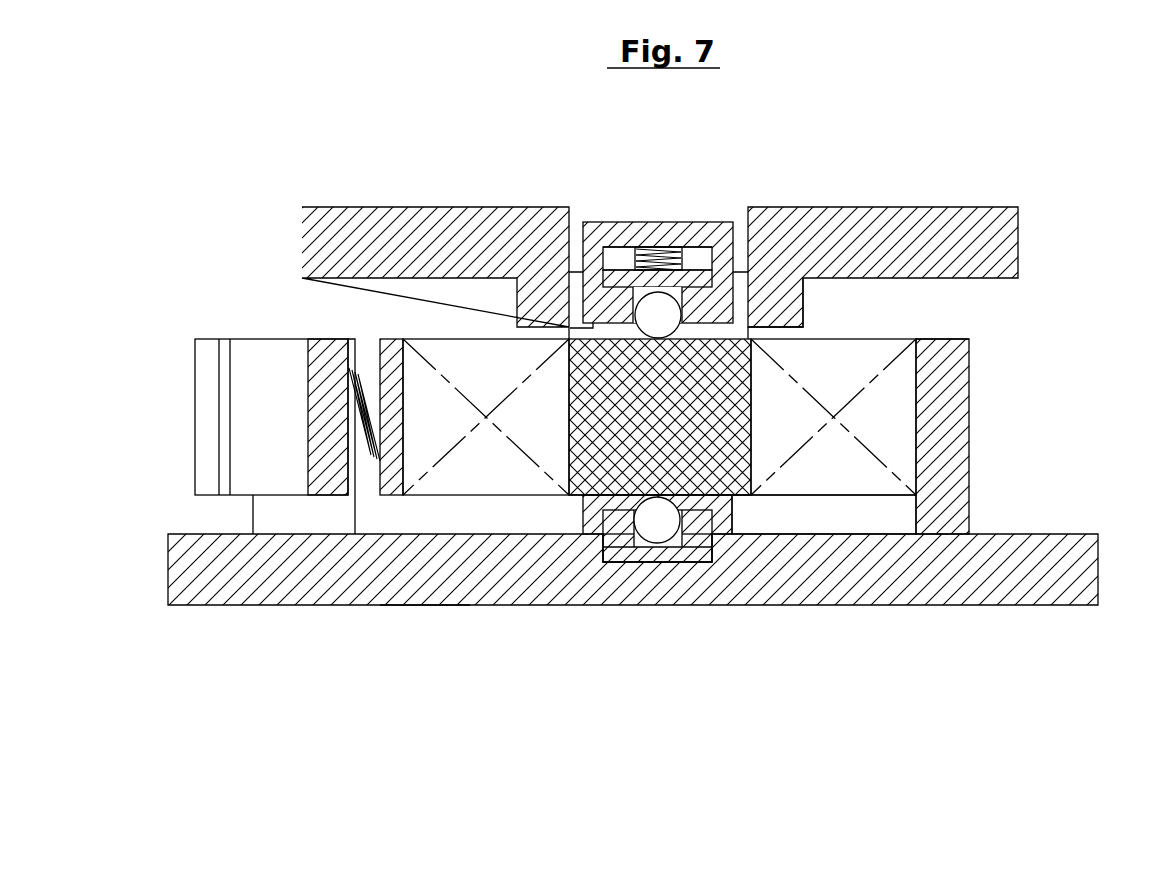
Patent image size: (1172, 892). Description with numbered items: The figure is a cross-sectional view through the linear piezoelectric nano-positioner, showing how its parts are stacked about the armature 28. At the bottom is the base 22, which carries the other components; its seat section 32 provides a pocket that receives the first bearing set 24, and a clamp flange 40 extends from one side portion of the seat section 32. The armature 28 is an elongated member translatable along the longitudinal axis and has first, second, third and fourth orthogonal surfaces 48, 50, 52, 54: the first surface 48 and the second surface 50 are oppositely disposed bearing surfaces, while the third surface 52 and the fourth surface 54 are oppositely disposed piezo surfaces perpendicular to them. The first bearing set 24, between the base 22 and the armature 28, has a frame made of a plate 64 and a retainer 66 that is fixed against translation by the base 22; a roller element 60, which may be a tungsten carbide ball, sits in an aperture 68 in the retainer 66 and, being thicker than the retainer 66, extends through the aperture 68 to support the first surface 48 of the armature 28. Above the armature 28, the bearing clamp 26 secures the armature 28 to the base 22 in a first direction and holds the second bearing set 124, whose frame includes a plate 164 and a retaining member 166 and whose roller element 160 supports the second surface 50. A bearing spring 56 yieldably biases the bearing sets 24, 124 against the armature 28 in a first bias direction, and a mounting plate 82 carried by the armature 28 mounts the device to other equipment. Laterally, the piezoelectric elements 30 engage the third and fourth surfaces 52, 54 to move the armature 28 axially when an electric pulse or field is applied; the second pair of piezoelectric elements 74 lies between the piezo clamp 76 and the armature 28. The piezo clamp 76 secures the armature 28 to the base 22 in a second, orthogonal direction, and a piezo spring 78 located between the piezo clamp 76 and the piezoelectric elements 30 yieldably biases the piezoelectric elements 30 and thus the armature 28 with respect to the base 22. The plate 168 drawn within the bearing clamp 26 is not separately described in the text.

The base 22 is at (345, 606).
The first bearing set 24 is at (600, 558).
The bearing clamp 26 is at (742, 211).
The armature 28 is at (583, 497).
The piezoelectric elements 30 is at (905, 340).
The seat section 32 is at (422, 608).
The clamp flange 40 is at (972, 432).
The first surface 48 is at (716, 498).
The second surface 50 is at (695, 335).
The third surface 52 is at (757, 436).
The fourth surface 54 is at (563, 433).
The bearing spring 56 is at (625, 248).
The roller element 60 is at (640, 550).
The plate 64 is at (706, 569).
The retainer 66 is at (618, 557).
The aperture 68 is at (678, 552).
The second pair of piezoelectric elements 74 is at (882, 328).
The piezo clamp 76 is at (307, 430).
The piezo spring 78 is at (352, 400).
The mounting plate 82 is at (338, 207).
The second bearing set 124 is at (600, 284).
The roller element 160 is at (683, 311).
The plate 164 is at (605, 261).
The retaining member 166 is at (691, 262).
The plate 168 is at (677, 282).